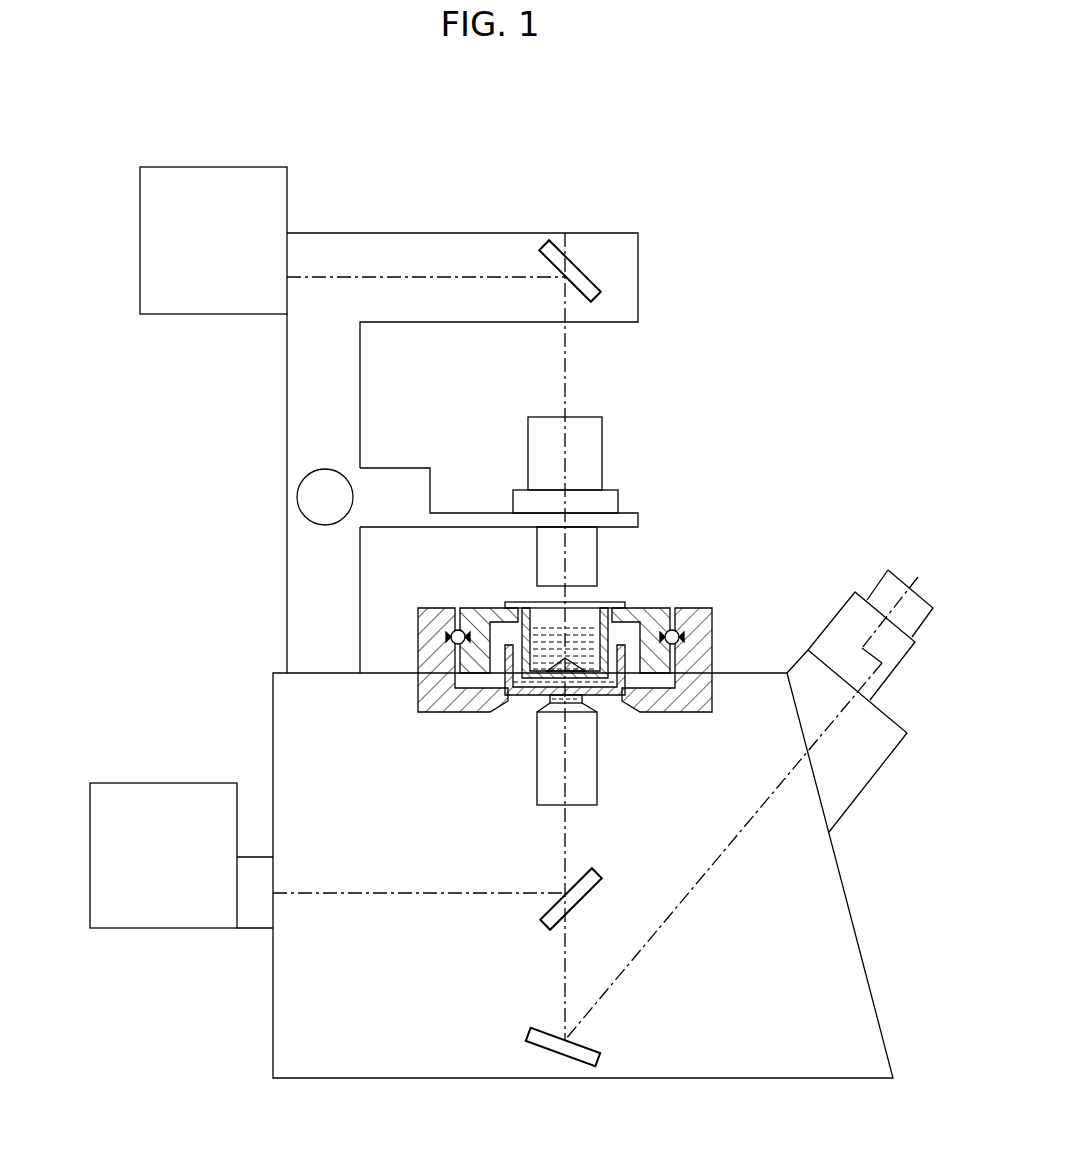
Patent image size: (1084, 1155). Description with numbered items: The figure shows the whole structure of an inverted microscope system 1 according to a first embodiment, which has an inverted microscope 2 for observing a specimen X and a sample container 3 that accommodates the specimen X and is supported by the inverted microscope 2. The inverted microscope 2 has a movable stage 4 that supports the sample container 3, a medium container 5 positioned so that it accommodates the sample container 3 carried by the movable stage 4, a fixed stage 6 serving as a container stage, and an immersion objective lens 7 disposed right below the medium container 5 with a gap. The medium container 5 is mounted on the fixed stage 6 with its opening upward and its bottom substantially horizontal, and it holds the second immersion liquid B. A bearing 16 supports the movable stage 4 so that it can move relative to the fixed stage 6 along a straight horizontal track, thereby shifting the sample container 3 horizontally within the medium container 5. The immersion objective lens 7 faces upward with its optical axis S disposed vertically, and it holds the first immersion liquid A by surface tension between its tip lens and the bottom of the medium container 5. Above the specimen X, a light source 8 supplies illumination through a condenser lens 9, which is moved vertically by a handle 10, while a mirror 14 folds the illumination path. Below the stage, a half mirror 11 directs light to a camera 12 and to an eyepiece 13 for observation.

The inverted microscope system 1 is at (722, 174).
The inverted microscope 2 is at (287, 388).
The sample container 3 is at (613, 600).
The movable stage 4 is at (655, 608).
The medium container 5 is at (523, 700).
The fixed stage 6 is at (445, 712).
The immersion objective lens 7 is at (598, 789).
The light source 8 is at (213, 167).
The condenser lens 9 is at (537, 547).
The handle 10 is at (300, 480).
The half mirror 11 is at (600, 875).
The camera 12 is at (150, 783).
The eyepiece 13 is at (887, 572).
The mirror 14 is at (560, 248).
The bearing 16 is at (680, 637).
The optical axis S is at (568, 367).
The specimen X is at (560, 652).
The first immersion medium A is at (586, 699).
The second immersion medium B is at (612, 665).